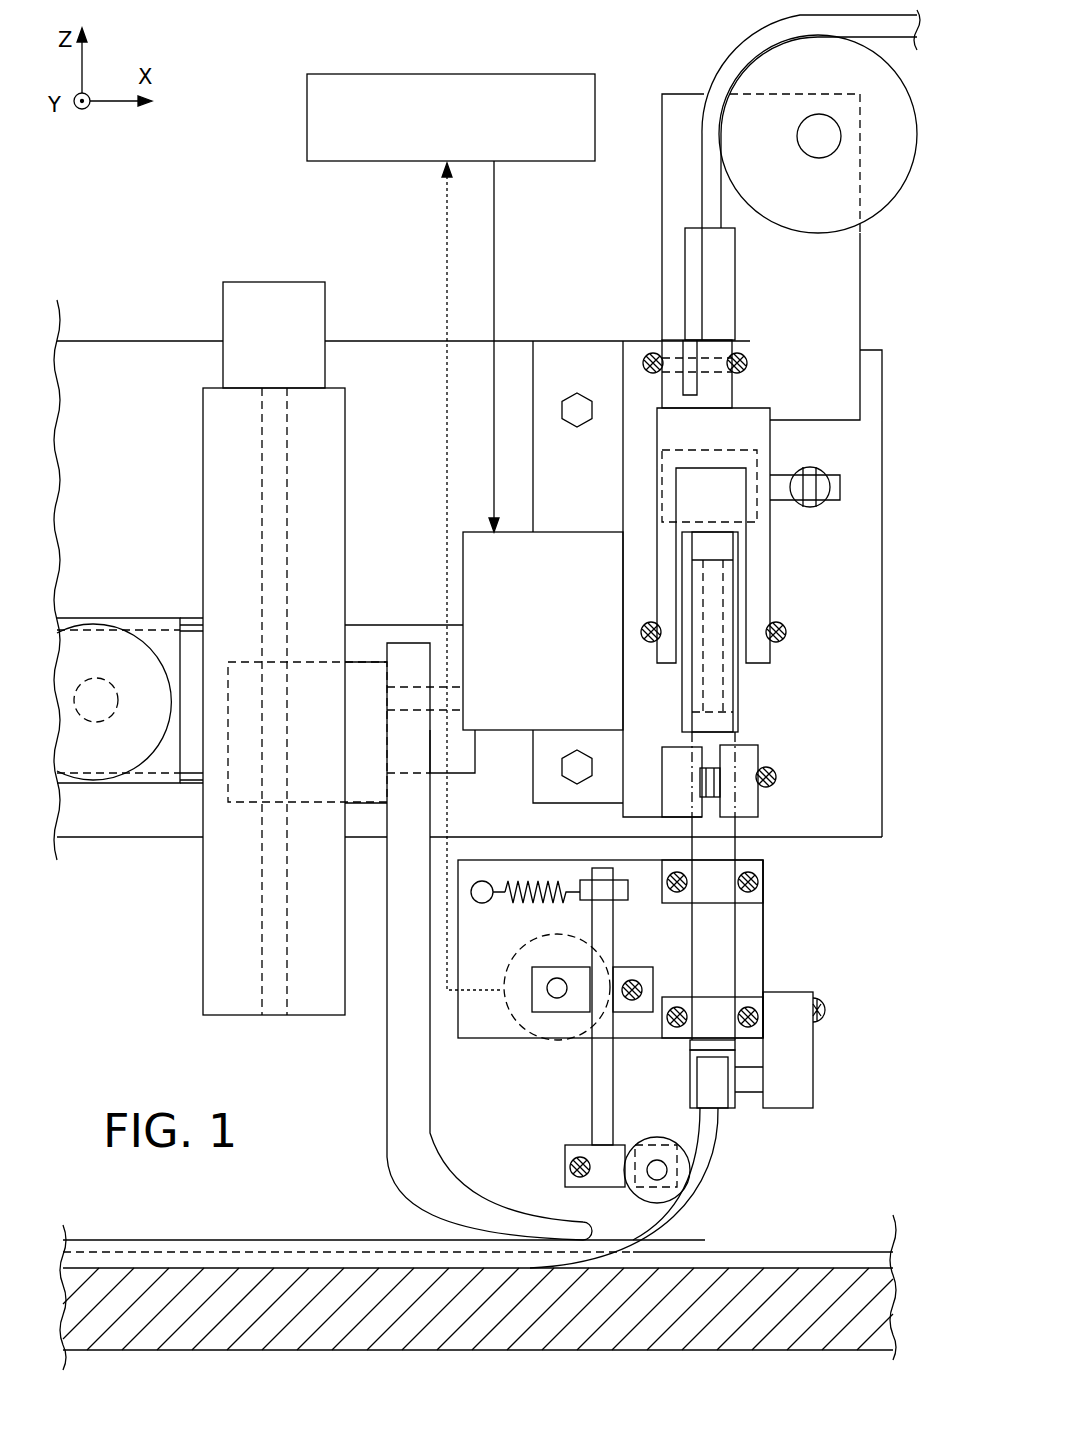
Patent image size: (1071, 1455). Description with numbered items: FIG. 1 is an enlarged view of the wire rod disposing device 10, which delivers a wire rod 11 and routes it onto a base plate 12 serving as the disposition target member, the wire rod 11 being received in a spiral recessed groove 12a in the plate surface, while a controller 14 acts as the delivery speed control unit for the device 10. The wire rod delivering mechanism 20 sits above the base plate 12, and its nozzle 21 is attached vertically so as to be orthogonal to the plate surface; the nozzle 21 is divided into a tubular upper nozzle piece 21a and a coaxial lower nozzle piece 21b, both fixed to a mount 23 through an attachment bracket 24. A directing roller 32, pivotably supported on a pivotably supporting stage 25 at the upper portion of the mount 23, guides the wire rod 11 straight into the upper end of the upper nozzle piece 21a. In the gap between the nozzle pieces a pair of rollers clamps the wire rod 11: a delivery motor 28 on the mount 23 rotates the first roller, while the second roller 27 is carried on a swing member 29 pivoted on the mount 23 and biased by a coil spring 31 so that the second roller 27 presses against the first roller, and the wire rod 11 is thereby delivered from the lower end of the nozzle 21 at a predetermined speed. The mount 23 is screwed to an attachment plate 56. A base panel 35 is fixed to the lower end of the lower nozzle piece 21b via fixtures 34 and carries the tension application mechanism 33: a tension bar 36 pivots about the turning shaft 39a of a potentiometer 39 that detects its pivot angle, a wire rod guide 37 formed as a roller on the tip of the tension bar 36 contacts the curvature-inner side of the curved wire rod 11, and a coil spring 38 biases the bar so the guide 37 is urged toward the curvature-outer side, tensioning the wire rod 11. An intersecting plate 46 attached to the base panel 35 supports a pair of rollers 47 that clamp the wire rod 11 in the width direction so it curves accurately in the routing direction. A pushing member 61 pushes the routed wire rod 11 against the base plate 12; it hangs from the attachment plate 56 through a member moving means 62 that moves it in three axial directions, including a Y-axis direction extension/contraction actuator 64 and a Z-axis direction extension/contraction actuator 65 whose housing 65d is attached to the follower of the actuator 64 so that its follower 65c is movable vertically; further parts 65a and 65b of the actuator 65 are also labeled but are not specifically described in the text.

The wire rod disposing device 10 is at (108, 214).
The wire rod 11 is at (727, 62).
The base plate 12 is at (762, 1346).
The recessed groove 12a is at (780, 1268).
The controller 14 is at (307, 118).
The wire rod delivering mechanism 20 is at (628, 287).
The nozzle 21 is at (764, 822).
The upper nozzle piece 21a is at (720, 272).
The lower nozzle piece 21b is at (730, 830).
The mount 23 is at (636, 341).
The attachment bracket 24 is at (748, 745).
The pivotably supporting stage 25 is at (860, 313).
The second roller 27 is at (735, 576).
The delivery motor 28 is at (480, 576).
The swing member 29 is at (765, 408).
The coil spring 31 is at (820, 470).
The directing roller 32 is at (878, 195).
The tension application mechanism 33 is at (770, 930).
The fixtures 34 is at (752, 870).
The base panel 35 is at (757, 956).
The tension bar 36 is at (592, 1095).
The wire rod guide 37 is at (657, 1138).
The coil spring 38 is at (535, 880).
The potentiometer 39 is at (510, 1028).
The turning shaft 39a is at (556, 1000).
The intersecting plate 46 is at (805, 1053).
The rollers 47 is at (718, 1098).
The attachment plate 56 is at (412, 350).
The pushing member 61 is at (387, 1137).
The member moving means 62 is at (148, 550).
The Y-axis direction extension/contraction actuator 64 is at (130, 786).
The Z-axis direction extension/contraction actuator 65 is at (362, 216).
The motor 65a is at (257, 292).
The lift body 65b is at (260, 437).
The follower 65c is at (360, 677).
The housing 65d is at (347, 412).